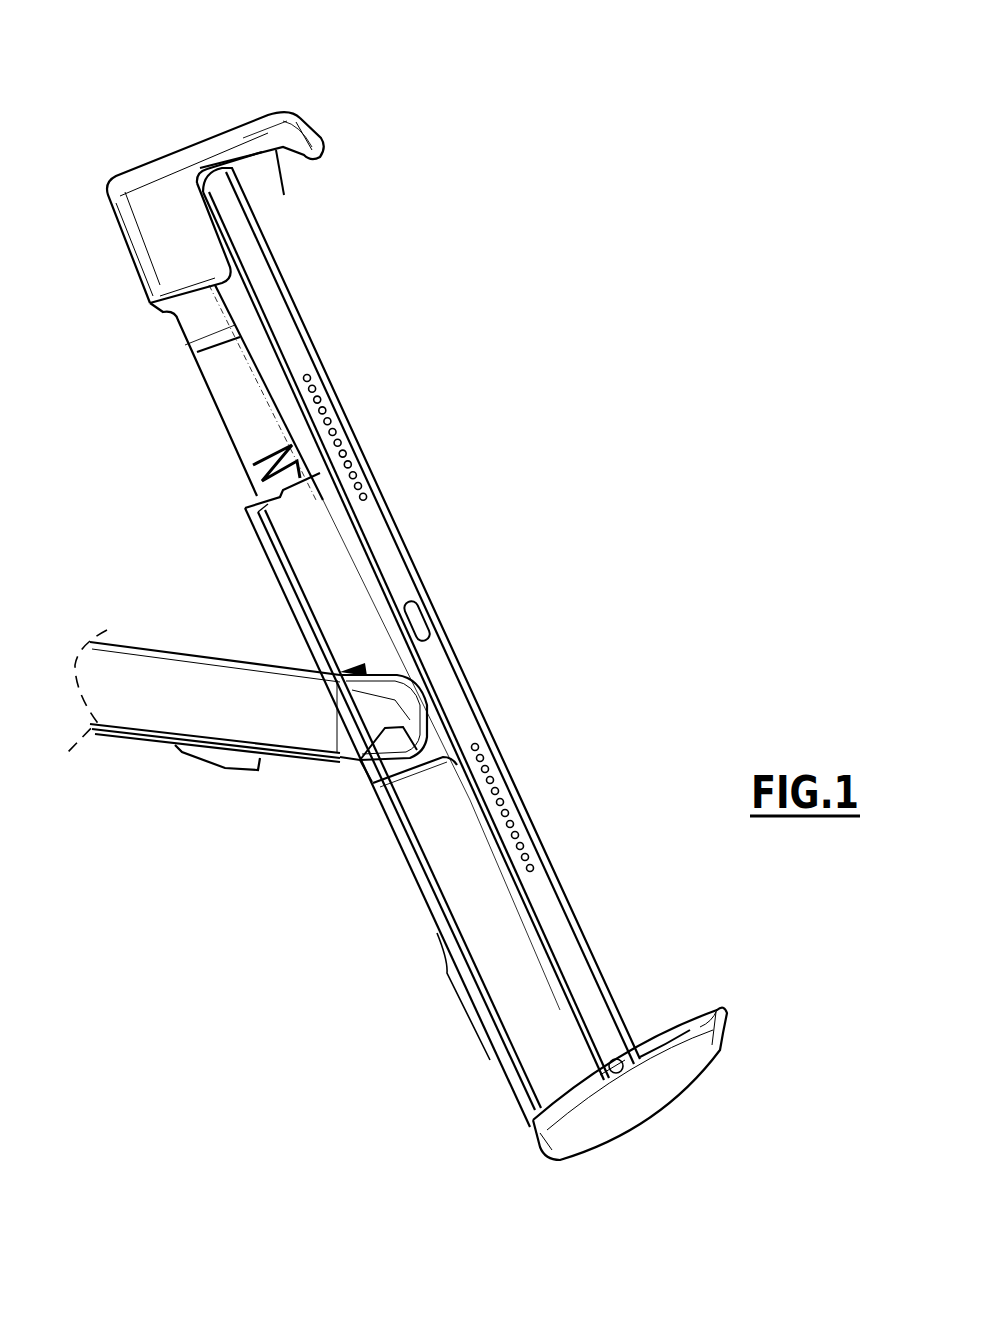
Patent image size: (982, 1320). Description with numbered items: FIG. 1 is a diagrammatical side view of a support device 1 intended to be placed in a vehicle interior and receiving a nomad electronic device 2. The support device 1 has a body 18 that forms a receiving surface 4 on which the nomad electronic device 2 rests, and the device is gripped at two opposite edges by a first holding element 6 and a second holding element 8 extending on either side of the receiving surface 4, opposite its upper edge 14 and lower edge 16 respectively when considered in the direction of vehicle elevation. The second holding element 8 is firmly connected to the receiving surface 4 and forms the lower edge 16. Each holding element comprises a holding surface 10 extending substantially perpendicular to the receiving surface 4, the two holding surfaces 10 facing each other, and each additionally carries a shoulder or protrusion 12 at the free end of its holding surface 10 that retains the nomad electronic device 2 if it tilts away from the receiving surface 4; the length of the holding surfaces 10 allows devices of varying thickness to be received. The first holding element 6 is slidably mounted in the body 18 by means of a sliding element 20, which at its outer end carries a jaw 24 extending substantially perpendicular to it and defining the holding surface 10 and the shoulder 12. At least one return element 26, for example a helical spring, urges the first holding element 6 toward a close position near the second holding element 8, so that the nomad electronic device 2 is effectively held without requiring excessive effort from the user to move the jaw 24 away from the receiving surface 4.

The support device 1 is at (333, 94).
The nomad electronic device 2 is at (292, 346).
The receiving surface 4 is at (363, 523).
The first holding element 6 is at (261, 126).
The second holding element 8 is at (708, 1040).
The holding surface 10 is at (277, 165).
The shoulder or protrusion 12 is at (311, 159).
The upper edge 14 is at (343, 481).
The lower edge 16 is at (643, 1060).
The body 18 is at (460, 897).
The sliding element 20 is at (232, 387).
The jaw 24 is at (160, 233).
The return element 26 is at (253, 481).